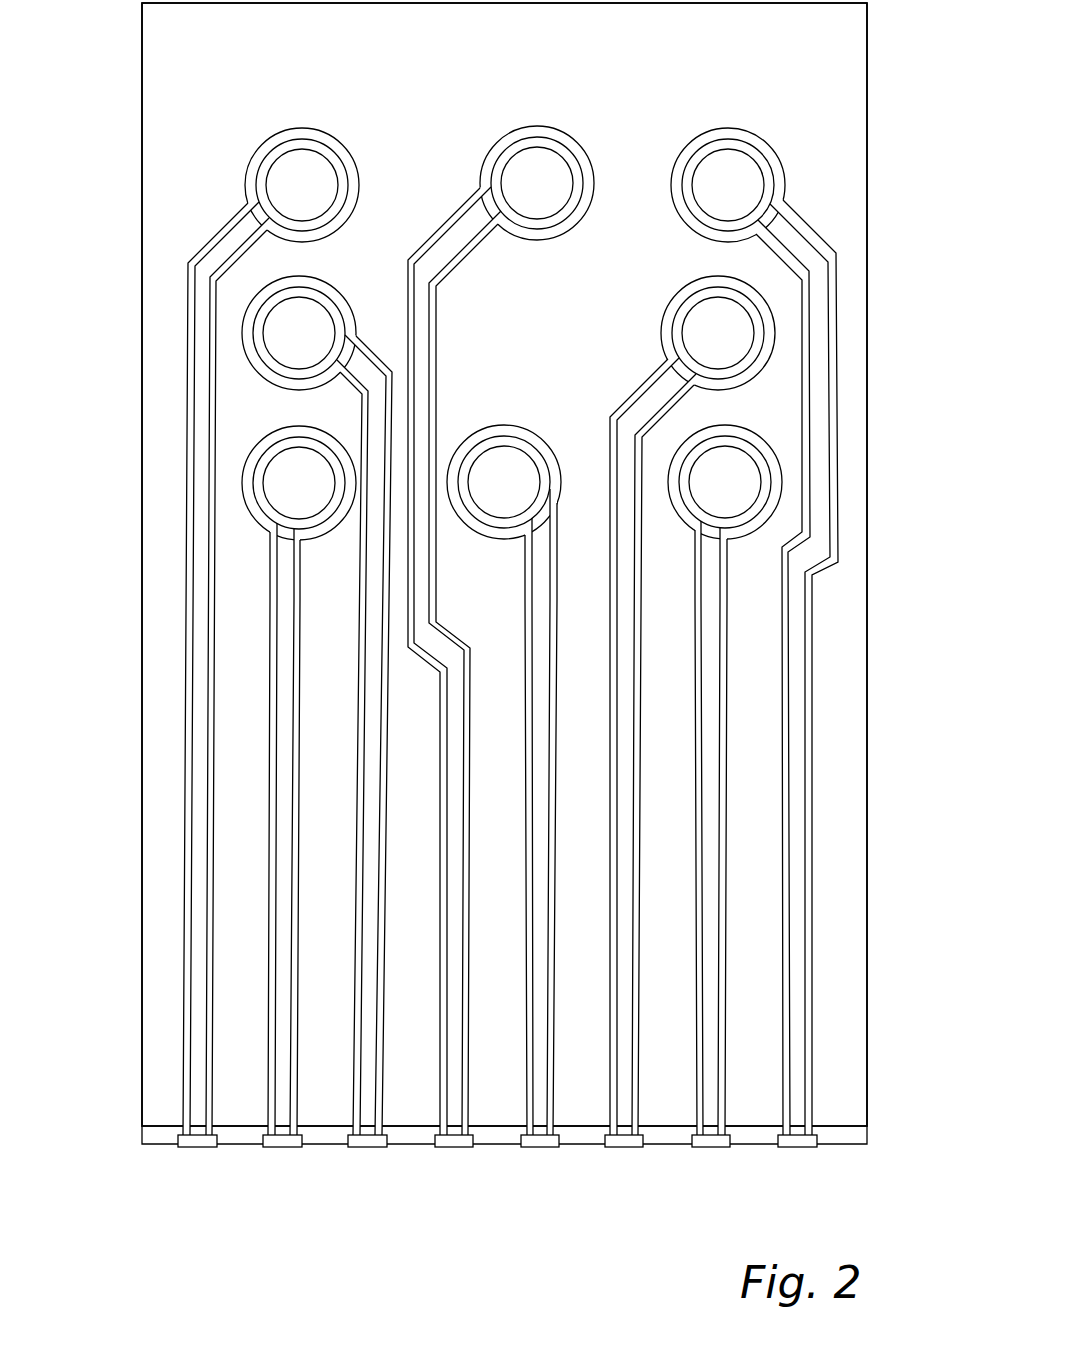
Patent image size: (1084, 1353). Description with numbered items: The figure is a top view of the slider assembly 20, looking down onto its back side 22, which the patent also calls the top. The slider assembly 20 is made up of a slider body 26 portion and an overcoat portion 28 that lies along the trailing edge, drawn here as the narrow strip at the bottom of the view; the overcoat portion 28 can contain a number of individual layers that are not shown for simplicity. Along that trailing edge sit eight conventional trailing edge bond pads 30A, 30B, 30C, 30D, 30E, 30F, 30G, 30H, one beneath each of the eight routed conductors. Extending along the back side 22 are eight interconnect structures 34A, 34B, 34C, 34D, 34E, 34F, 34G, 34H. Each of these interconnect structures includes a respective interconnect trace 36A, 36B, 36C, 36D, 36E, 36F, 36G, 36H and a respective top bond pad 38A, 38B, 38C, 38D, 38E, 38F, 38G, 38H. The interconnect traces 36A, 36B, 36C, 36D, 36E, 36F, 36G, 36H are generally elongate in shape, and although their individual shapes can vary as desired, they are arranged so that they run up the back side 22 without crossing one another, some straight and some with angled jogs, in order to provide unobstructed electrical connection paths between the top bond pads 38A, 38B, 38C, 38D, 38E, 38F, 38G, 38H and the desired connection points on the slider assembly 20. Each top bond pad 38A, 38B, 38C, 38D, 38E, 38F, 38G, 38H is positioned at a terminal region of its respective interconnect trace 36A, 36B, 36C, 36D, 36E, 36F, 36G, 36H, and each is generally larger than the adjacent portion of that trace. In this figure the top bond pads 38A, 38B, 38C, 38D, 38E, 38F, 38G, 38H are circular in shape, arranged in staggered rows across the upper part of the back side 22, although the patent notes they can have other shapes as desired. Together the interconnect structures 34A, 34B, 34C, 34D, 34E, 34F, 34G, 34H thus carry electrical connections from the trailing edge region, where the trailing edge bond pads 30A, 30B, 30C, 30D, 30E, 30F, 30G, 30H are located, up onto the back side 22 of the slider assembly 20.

The slider assembly 20 is at (126, 1167).
The back side 22 is at (164, 756).
The slider body 26 is at (160, 818).
The overcoat portion 28 is at (150, 1135).
The trailing edge bond pad 30A is at (213, 1150).
The trailing edge bond pad 30B is at (300, 1150).
The trailing edge bond pad 30C is at (386, 1150).
The trailing edge bond pad 30D is at (432, 1148).
The trailing edge bond pad 30E is at (522, 1150).
The trailing edge bond pad 30F is at (603, 1148).
The trailing edge bond pad 30G is at (680, 1148).
The trailing edge bond pad 30H is at (767, 1148).
The interconnect structure 34A is at (223, 229).
The interconnect structure 34B is at (278, 587).
The interconnect structure 34C is at (364, 321).
The interconnect structure 34D is at (555, 175).
The interconnect structure 34E is at (514, 461).
The interconnect structure 34F is at (782, 353).
The interconnect structure 34G is at (724, 627).
The interconnect structure 34H is at (806, 203).
The interconnect trace 36A is at (198, 284).
The interconnect trace 36B is at (285, 652).
The interconnect trace 36C is at (380, 415).
The interconnect trace 36D is at (453, 243).
The interconnect trace 36E is at (540, 566).
The interconnect trace 36F is at (665, 397).
The interconnect trace 36G is at (705, 910).
The interconnect trace 36H is at (800, 248).
The top bond pad 38A is at (312, 175).
The top bond pad 38B is at (287, 482).
The top bond pad 38C is at (290, 318).
The top bond pad 38D is at (523, 200).
The top bond pad 38E is at (488, 476).
The top bond pad 38F is at (737, 327).
The top bond pad 38G is at (742, 481).
The top bond pad 38H is at (731, 178).